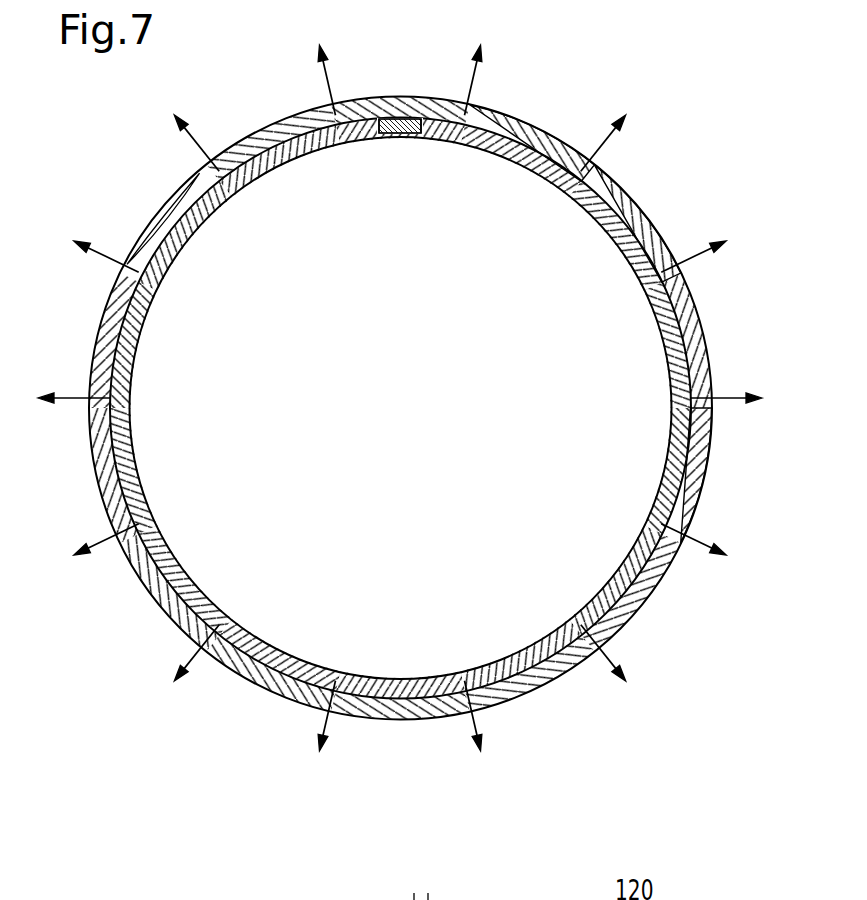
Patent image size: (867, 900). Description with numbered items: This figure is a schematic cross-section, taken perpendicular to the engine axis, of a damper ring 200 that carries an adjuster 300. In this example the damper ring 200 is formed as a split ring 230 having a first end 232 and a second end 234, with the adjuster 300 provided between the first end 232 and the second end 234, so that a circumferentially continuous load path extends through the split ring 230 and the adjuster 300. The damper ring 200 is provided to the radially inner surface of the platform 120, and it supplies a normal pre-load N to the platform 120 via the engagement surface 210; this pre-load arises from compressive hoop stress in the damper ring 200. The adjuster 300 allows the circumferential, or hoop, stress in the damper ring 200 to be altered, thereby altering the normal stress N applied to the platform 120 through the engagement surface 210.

The platform 120 is at (699, 341).
The damper ring 200 is at (698, 468).
The engagement surface 210 is at (497, 128).
The split ring 230 is at (626, 212).
The adjuster 300 is at (404, 117).
The first end 232 is at (389, 133).
The second end 234 is at (407, 133).
The normal stress (pre-load) N is at (405, 405).